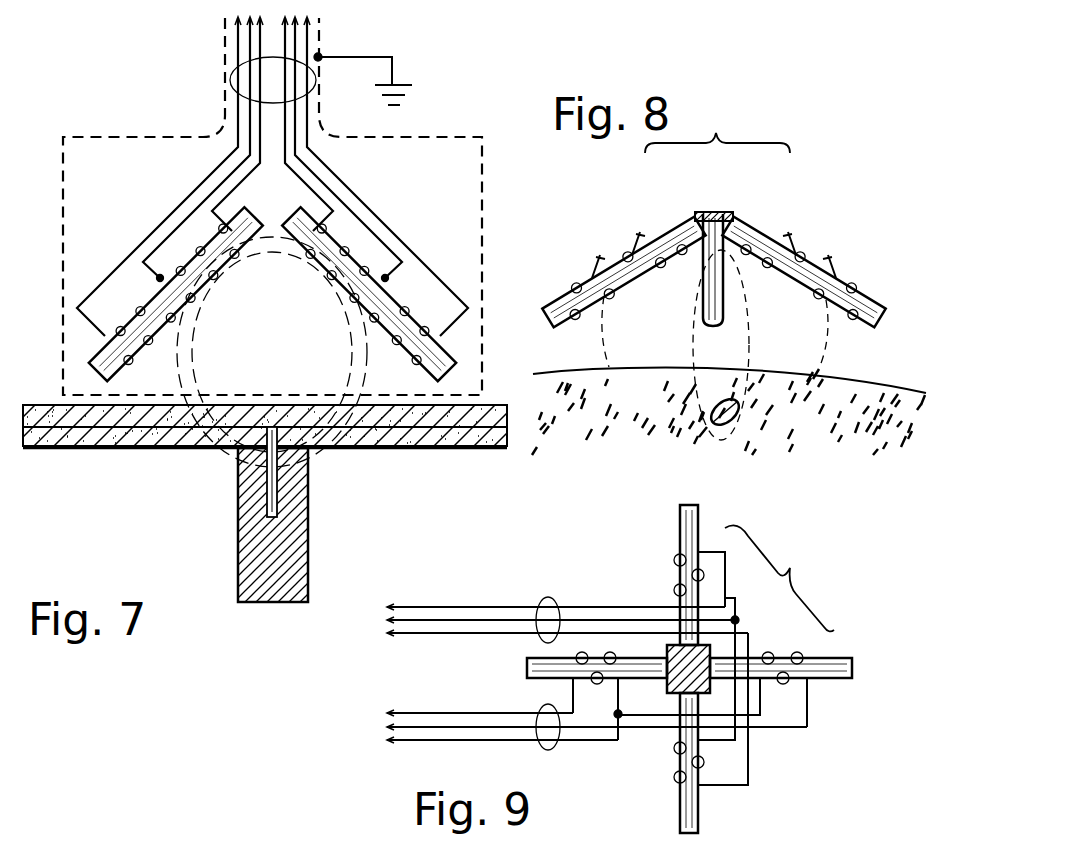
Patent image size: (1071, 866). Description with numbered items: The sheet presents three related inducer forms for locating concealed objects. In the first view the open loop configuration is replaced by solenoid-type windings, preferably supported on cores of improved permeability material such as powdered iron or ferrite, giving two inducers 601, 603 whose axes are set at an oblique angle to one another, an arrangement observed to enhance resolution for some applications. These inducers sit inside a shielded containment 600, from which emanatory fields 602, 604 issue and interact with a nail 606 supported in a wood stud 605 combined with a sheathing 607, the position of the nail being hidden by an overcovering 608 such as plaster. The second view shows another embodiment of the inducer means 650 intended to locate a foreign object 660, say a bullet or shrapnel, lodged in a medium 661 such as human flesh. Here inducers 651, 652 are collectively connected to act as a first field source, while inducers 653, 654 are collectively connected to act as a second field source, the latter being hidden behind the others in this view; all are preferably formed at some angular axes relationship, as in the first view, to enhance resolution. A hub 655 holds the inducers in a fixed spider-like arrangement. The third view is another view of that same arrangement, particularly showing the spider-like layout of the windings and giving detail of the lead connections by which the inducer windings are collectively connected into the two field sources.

In FIG. 7, the shielded containment 600 is at (428, 166).
In FIG. 7, the inducer 601 is at (128, 322).
In FIG. 7, the emanatory field 602 is at (160, 471).
In FIG. 7, the inducer 603 is at (403, 320).
In FIG. 7, the emanatory field 604 is at (400, 471).
In FIG. 7, the wood stud 605 is at (253, 567).
In FIG. 7, the nail 606 is at (277, 508).
In FIG. 7, the sheathing 607 is at (90, 449).
In FIG. 7, the overcovering 608 is at (23, 412).
In FIG. 8, the inducer means 650 is at (717, 125).
In FIG. 8, the inducer 651 is at (585, 301).
In FIG. 8, the inducer 652 is at (850, 305).
In FIG. 8, the inducer 653 is at (716, 308).
In FIG. 8, the inducer 654 is at (700, 253).
In FIG. 8, the hub 655 is at (713, 210).
In FIG. 8, the foreign object 660 is at (740, 402).
In FIG. 8, the medium 661 is at (898, 398).